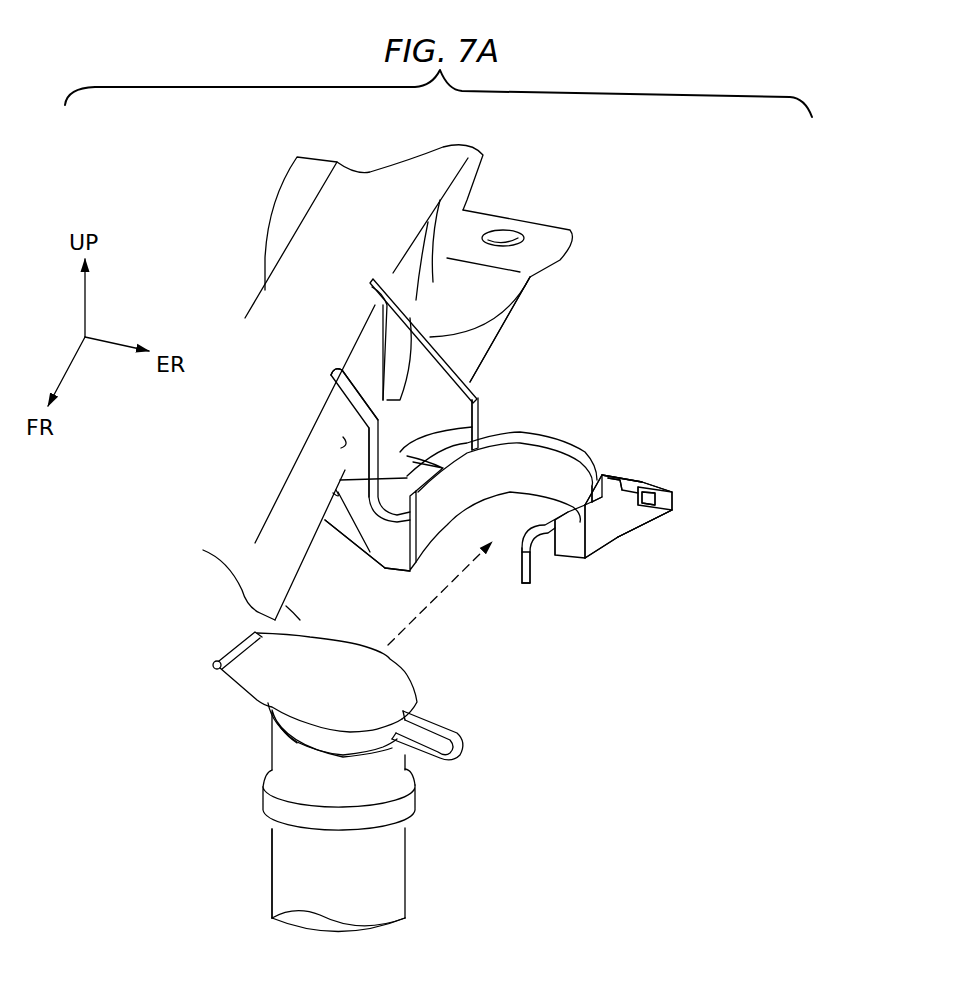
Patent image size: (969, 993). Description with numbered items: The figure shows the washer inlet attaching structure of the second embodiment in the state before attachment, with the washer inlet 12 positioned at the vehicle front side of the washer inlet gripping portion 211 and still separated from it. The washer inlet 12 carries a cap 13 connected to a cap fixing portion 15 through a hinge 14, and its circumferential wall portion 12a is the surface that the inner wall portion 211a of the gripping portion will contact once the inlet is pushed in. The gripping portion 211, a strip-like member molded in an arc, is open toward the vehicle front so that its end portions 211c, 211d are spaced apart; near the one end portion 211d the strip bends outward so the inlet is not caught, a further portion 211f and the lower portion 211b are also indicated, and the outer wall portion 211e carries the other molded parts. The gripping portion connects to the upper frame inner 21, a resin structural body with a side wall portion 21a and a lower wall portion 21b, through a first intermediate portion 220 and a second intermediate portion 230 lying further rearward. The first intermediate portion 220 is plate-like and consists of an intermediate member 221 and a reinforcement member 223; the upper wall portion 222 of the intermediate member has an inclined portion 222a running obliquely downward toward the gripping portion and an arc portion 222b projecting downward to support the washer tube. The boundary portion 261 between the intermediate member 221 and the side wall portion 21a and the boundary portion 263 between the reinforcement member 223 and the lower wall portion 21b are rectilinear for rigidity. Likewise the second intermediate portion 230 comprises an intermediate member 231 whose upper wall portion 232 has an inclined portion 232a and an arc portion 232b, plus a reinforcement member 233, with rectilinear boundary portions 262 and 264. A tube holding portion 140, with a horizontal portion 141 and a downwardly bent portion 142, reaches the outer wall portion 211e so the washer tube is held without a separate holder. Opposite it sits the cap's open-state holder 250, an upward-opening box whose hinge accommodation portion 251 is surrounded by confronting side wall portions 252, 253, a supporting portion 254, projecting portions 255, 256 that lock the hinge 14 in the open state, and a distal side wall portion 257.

The washer inlet 12 is at (416, 848).
The circumferential wall portion 12a is at (388, 882).
The cap 13 is at (398, 675).
The hinge 14 is at (450, 729).
The cap fixing portion 15 is at (373, 740).
The upper frame inner 21 is at (246, 298).
The side wall portion 21a is at (243, 595).
The lower wall portion 21b is at (312, 555).
The tube holding portion 140 is at (578, 362).
The horizontal portion 141 is at (483, 445).
The bent portion 142 is at (483, 413).
The washer inlet gripping portion 211 is at (603, 453).
The inner wall portion 211a is at (603, 470).
The lower portion 211b is at (600, 525).
The end portion 211c is at (380, 548).
The end portion 211d is at (540, 565).
The outer wall portion 211e is at (545, 565).
The clip rear portion 211f is at (560, 467).
The first intermediate portion 220 is at (145, 470).
The intermediate member 221 is at (340, 482).
The upper wall portion 222 is at (213, 358).
The inclined portion 222a is at (333, 395).
The arc portion 222b is at (347, 430).
The reinforcement member 223 is at (325, 521).
The second intermediate portion 230 is at (290, 302).
The intermediate member 231 is at (400, 345).
The upper wall portion 232 is at (650, 247).
The inclined portion 232a is at (515, 272).
The arc portion 232b is at (490, 390).
The reinforcement member 233 is at (346, 362).
The cap's open-state holder 250 is at (678, 622).
The hinge accommodation portion 251 is at (767, 463).
The side wall portion 252 is at (590, 575).
The side wall portion 253 is at (645, 490).
The supporting portion 254 is at (595, 545).
The projecting portion 255 is at (645, 528).
The projecting portion 256 is at (650, 503).
The side wall portion 257 is at (655, 522).
The boundary portion 261 is at (343, 440).
The boundary portion 262 is at (370, 282).
The boundary portion 263 is at (335, 494).
The boundary portion 264 is at (388, 278).